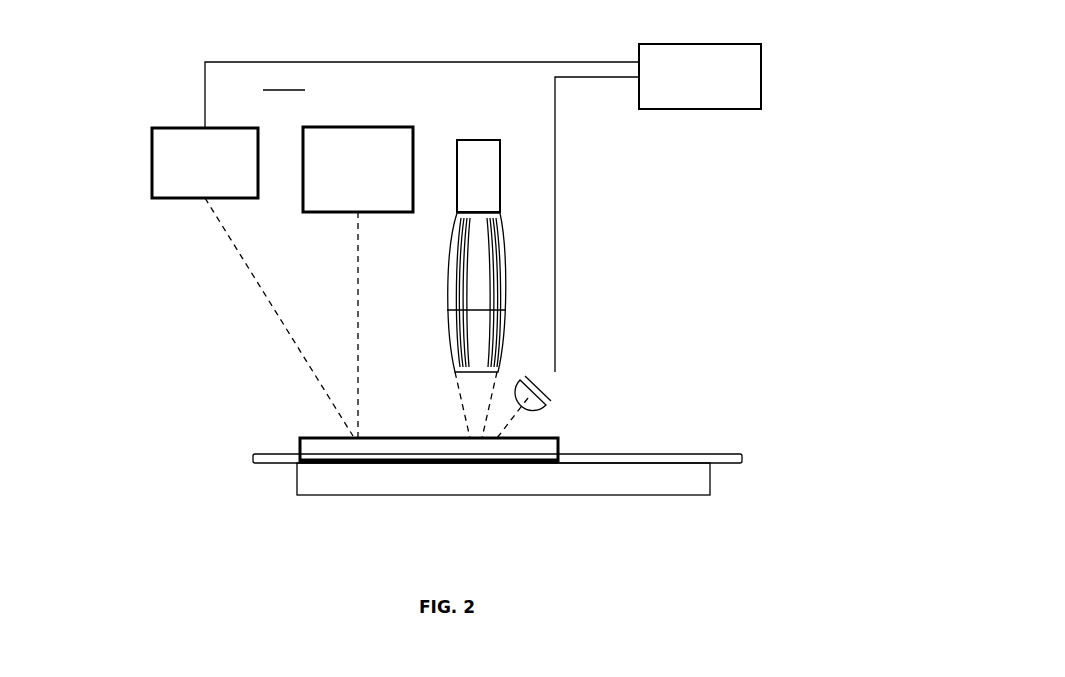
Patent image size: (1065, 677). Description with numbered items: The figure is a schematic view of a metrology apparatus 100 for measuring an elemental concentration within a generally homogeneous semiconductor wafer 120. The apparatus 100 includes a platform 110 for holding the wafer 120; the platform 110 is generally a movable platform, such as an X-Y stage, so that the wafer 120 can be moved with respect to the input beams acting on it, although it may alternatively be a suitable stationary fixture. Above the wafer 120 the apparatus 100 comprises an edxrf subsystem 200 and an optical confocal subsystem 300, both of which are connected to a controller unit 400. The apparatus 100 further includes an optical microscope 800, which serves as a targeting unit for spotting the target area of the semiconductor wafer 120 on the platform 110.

The metrology apparatus 100 is at (163, 85).
The optical confocal subsystem 300 is at (152, 113).
The optical microscope 800 is at (353, 212).
The edxrf subsystem 200 is at (480, 158).
The controller unit 400 is at (760, 67).
The semiconductor wafer 120 is at (553, 452).
The platform 110 is at (355, 473).